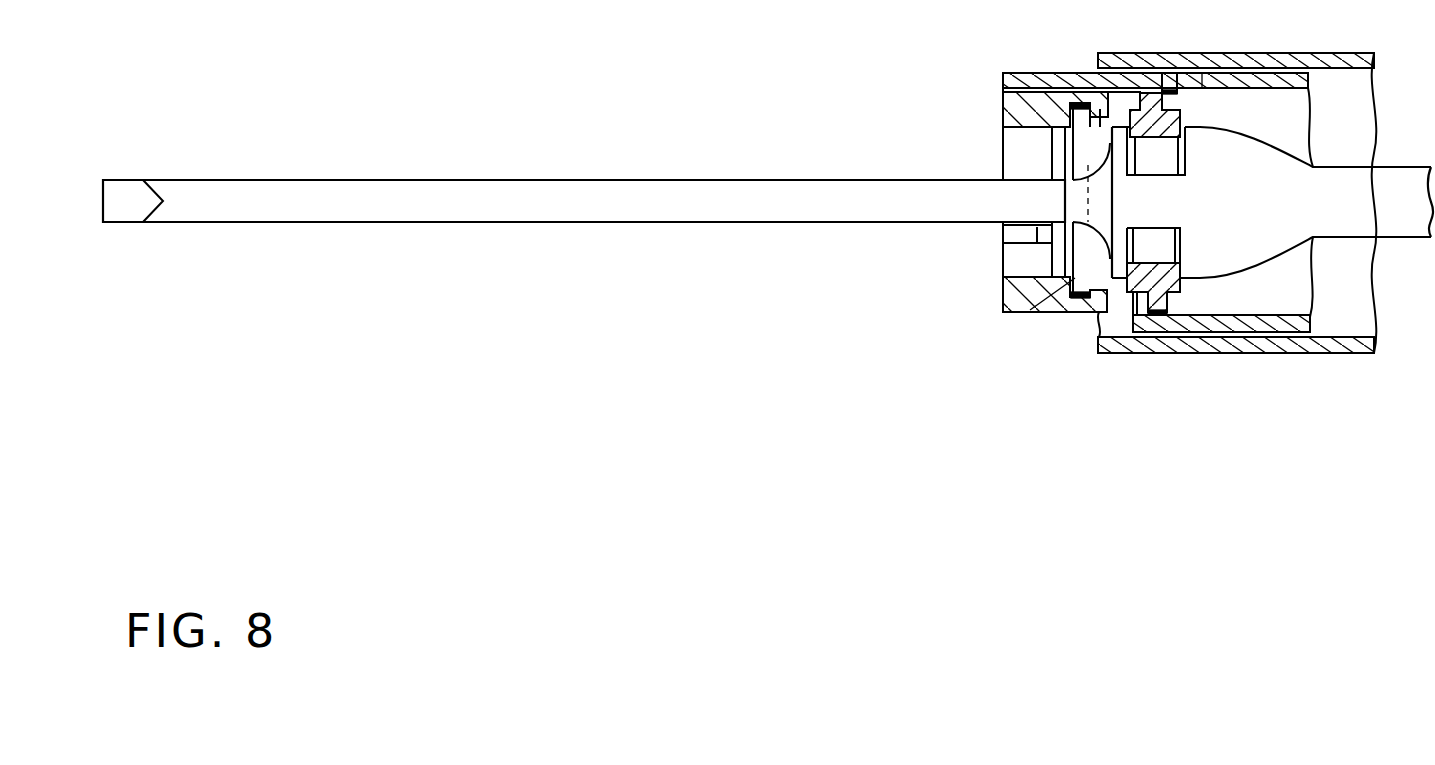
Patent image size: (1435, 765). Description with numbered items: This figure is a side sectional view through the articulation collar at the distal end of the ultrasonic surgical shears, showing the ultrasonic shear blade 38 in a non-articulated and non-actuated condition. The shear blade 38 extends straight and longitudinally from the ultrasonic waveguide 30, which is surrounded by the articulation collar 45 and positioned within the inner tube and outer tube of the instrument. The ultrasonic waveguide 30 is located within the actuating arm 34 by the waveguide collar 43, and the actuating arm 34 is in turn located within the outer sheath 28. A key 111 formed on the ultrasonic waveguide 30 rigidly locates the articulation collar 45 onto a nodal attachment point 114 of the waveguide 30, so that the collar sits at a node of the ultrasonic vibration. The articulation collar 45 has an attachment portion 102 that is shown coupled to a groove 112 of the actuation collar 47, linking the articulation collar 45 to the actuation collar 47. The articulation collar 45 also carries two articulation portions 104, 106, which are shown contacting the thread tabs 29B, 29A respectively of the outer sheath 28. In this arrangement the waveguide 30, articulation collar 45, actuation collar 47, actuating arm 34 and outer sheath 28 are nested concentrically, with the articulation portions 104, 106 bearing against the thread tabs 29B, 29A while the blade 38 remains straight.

The outer sheath 28 is at (1330, 348).
The thread tab 29A is at (1098, 329).
The thread tab 29B is at (1169, 92).
The ultrasonic waveguide 30 is at (1412, 216).
The actuating arm 34 is at (1288, 88).
The ultrasonic shear blade 38 is at (412, 205).
The waveguide collar 43 is at (998, 289).
The articulation collar 45 is at (1162, 122).
The actuation collar 47 is at (1018, 105).
The attachment portion 102 is at (1078, 128).
The articulation portion 104 is at (1138, 98).
The articulation portion 106 is at (1160, 312).
The key 111 is at (1155, 202).
The groove 112 is at (1055, 292).
The nodal attachment point 114 is at (1172, 158).